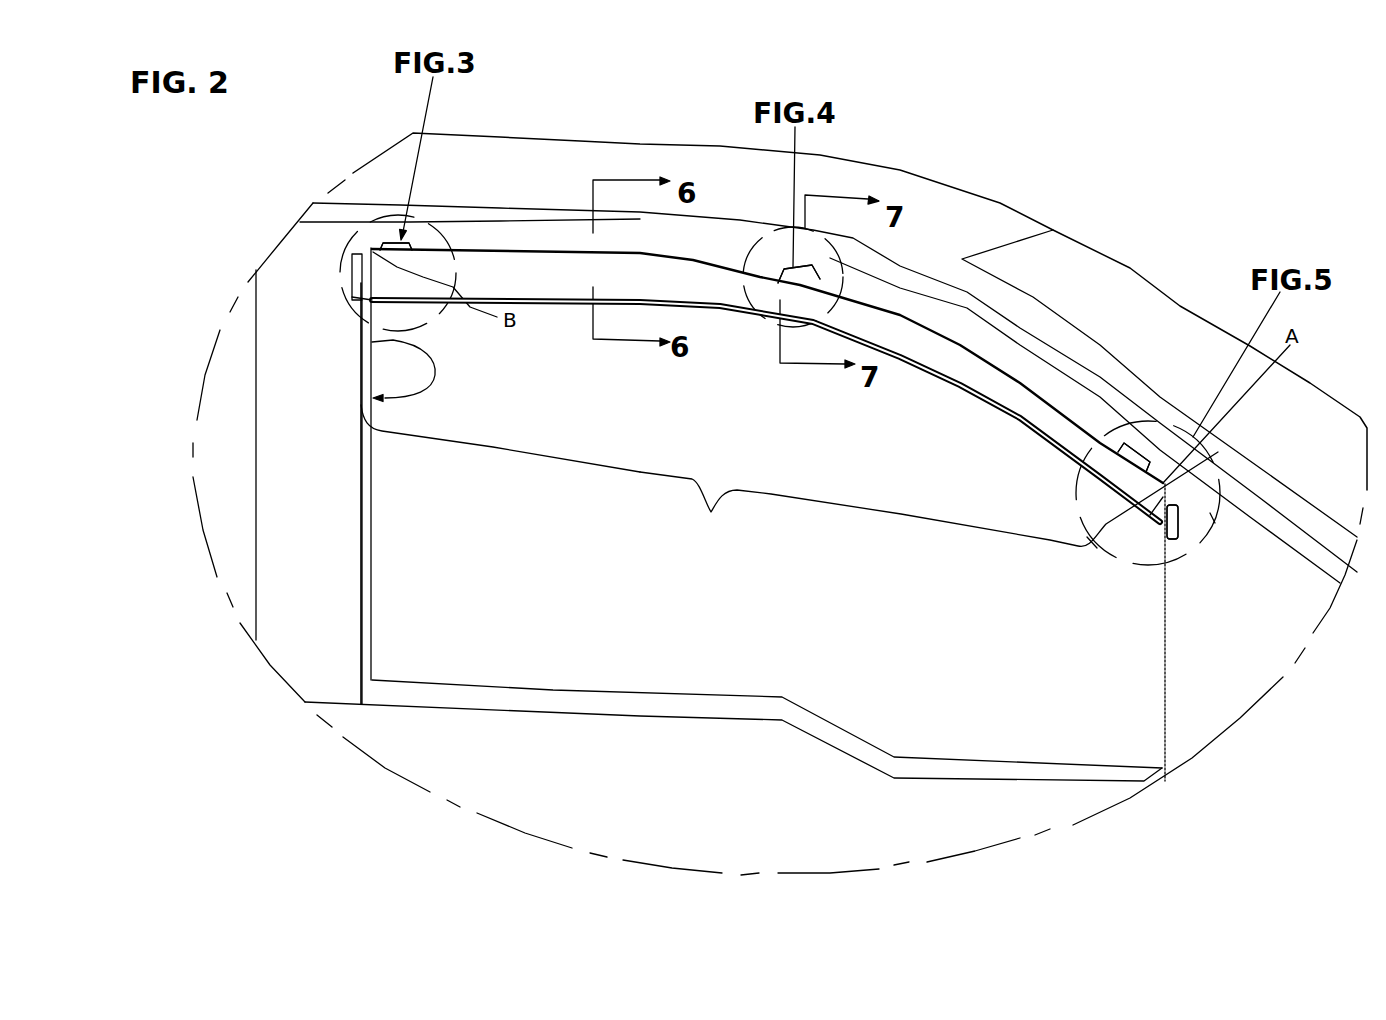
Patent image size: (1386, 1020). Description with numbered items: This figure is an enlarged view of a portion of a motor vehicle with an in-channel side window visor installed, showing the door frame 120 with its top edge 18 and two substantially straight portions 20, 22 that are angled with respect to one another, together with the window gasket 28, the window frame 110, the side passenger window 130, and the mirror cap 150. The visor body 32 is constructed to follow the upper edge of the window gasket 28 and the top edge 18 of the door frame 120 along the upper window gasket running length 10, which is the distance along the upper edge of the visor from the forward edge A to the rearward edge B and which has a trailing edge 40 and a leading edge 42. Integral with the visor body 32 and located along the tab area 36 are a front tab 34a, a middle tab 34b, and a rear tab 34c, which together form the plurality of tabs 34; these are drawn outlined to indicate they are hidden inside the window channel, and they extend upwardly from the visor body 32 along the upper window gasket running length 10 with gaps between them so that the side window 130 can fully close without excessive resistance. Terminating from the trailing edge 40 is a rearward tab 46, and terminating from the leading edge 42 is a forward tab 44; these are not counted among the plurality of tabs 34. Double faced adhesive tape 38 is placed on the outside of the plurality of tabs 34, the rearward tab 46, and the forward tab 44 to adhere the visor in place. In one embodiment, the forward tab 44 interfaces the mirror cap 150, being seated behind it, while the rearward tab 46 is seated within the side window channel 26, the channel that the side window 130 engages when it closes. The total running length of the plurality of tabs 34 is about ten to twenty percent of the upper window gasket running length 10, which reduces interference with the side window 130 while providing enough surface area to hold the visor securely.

The upper window gasket running length 10 is at (929, 500).
The top edge 18 is at (738, 210).
The substantially straight portion 20 is at (613, 222).
The substantially straight portion 22 is at (1023, 345).
The side window channel 26 is at (372, 342).
The window gasket 28 is at (488, 240).
The visor body 32 is at (552, 273).
The plurality of tabs 34 is at (398, 238).
The front tab 34a is at (1129, 450).
The middle tab 34b is at (807, 272).
The rear tab 34c is at (387, 243).
The tab area 36 is at (695, 255).
The adhesive tape 38 is at (413, 240).
The trailing edge 40 is at (384, 283).
The leading edge 42 is at (1150, 515).
The forward tab 44 is at (1178, 537).
The rearward tab 46 is at (352, 287).
The window frame 110 is at (340, 498).
The door frame 120 is at (515, 220).
The side passenger window 130 is at (790, 608).
The mirror cap 150 is at (1287, 634).